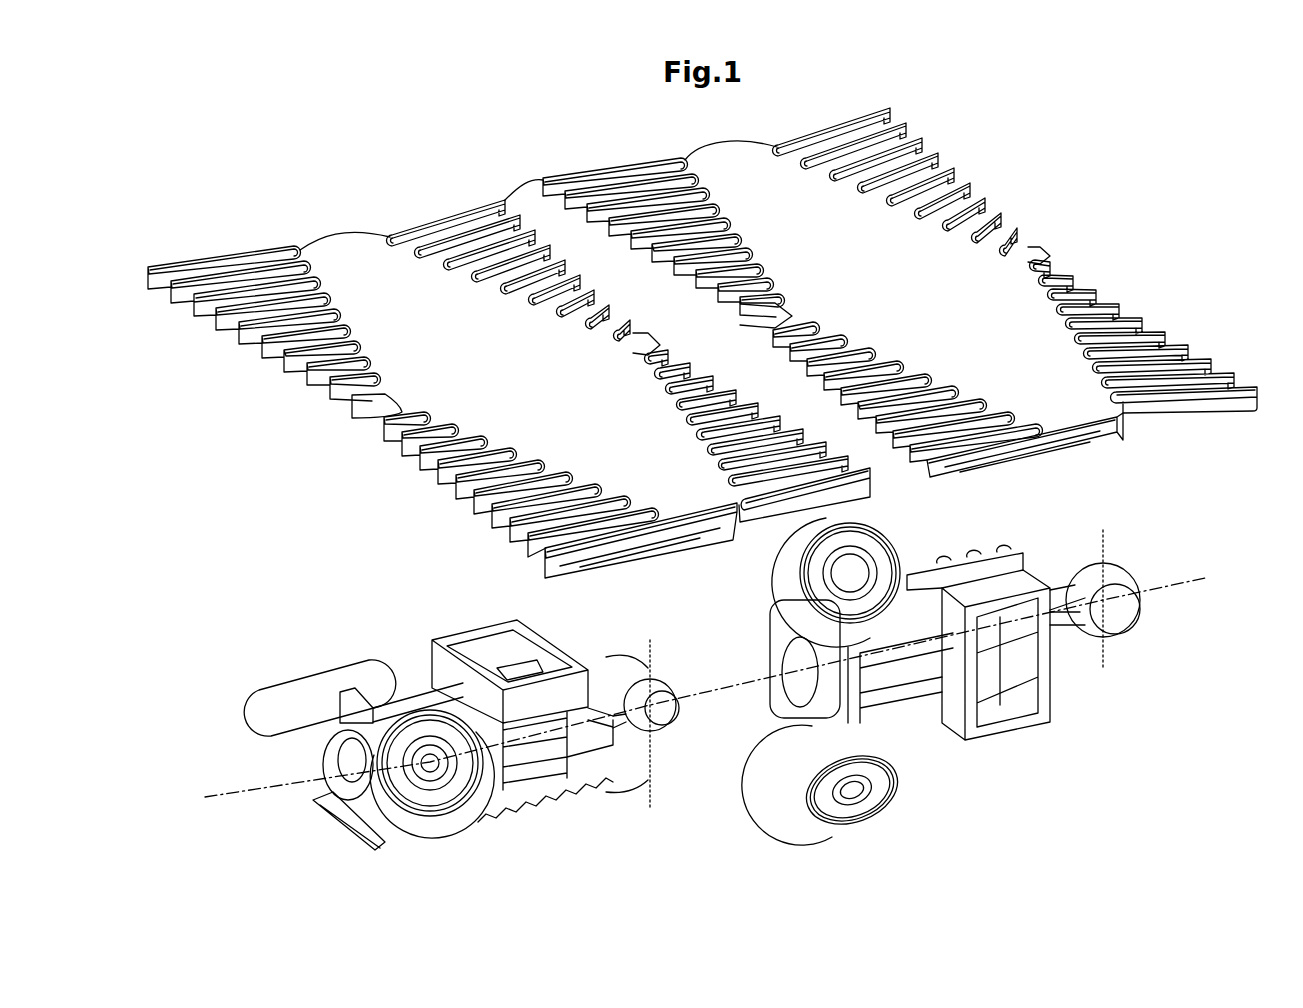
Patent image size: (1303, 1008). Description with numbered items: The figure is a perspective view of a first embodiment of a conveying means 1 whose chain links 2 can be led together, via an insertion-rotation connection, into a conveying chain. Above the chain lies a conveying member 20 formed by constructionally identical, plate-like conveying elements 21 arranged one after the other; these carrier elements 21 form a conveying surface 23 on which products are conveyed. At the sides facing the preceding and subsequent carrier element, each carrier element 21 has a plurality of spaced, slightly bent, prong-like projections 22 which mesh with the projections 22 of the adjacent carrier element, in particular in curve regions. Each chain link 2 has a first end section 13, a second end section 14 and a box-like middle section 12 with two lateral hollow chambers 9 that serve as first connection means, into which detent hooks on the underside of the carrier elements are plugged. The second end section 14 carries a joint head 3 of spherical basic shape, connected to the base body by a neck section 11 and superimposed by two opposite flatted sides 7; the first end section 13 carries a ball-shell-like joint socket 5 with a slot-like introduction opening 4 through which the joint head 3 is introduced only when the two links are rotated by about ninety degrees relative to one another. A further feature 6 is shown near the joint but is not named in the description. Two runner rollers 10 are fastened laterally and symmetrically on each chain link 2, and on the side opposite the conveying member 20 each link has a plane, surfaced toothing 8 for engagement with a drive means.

The conveying means 1 is at (1178, 240).
The chain link 2 is at (701, 690).
The joint head 3 is at (1150, 580).
The introduction opening 4 is at (335, 775).
The joint socket 5 is at (330, 768).
The ball 6 is at (1107, 575).
The flatted sides 7 is at (522, 668).
The toothing 8 is at (545, 815).
The hollow chambers 9 is at (480, 640).
The runner rollers 10 is at (258, 672).
The neck section 11 is at (1075, 640).
The middle section 12 is at (997, 740).
The first end section 13 is at (800, 708).
The second end section 14 is at (1053, 643).
The conveying member 20 is at (253, 236).
The conveying elements 21 is at (693, 150).
The prong-like projections 22 is at (1158, 332).
The conveying surface 23 is at (345, 276).